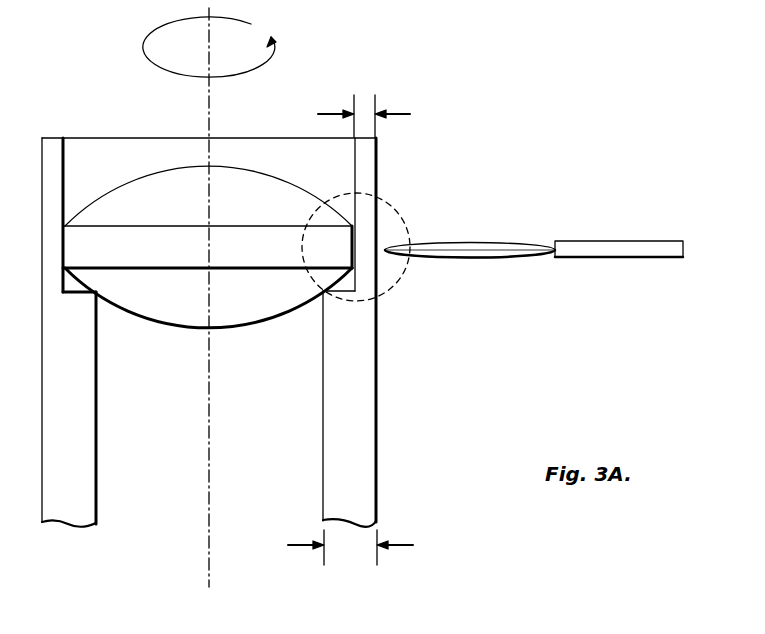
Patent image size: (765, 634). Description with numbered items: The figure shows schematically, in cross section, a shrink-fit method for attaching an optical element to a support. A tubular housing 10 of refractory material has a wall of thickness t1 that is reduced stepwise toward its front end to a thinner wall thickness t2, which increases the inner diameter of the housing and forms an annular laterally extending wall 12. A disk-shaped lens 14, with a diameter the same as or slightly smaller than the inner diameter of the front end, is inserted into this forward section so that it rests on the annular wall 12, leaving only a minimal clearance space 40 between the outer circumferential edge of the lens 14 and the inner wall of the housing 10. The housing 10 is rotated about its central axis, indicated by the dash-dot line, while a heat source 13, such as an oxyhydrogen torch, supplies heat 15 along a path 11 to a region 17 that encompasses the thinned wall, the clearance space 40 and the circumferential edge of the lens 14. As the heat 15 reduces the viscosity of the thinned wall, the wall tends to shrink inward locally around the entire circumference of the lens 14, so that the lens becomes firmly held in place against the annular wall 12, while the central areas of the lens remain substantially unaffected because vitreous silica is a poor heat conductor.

The tubular housing 10 is at (378, 368).
The optical fiber 11 is at (472, 252).
The annular laterally extending wall 12 is at (345, 293).
The heat source 13 is at (616, 242).
The lens 14 is at (239, 204).
The heat 15 is at (458, 243).
The region 17 is at (410, 238).
The clearance space 40 is at (67, 216).
The thickness t1 is at (349, 548).
The wall thickness t2 is at (362, 103).